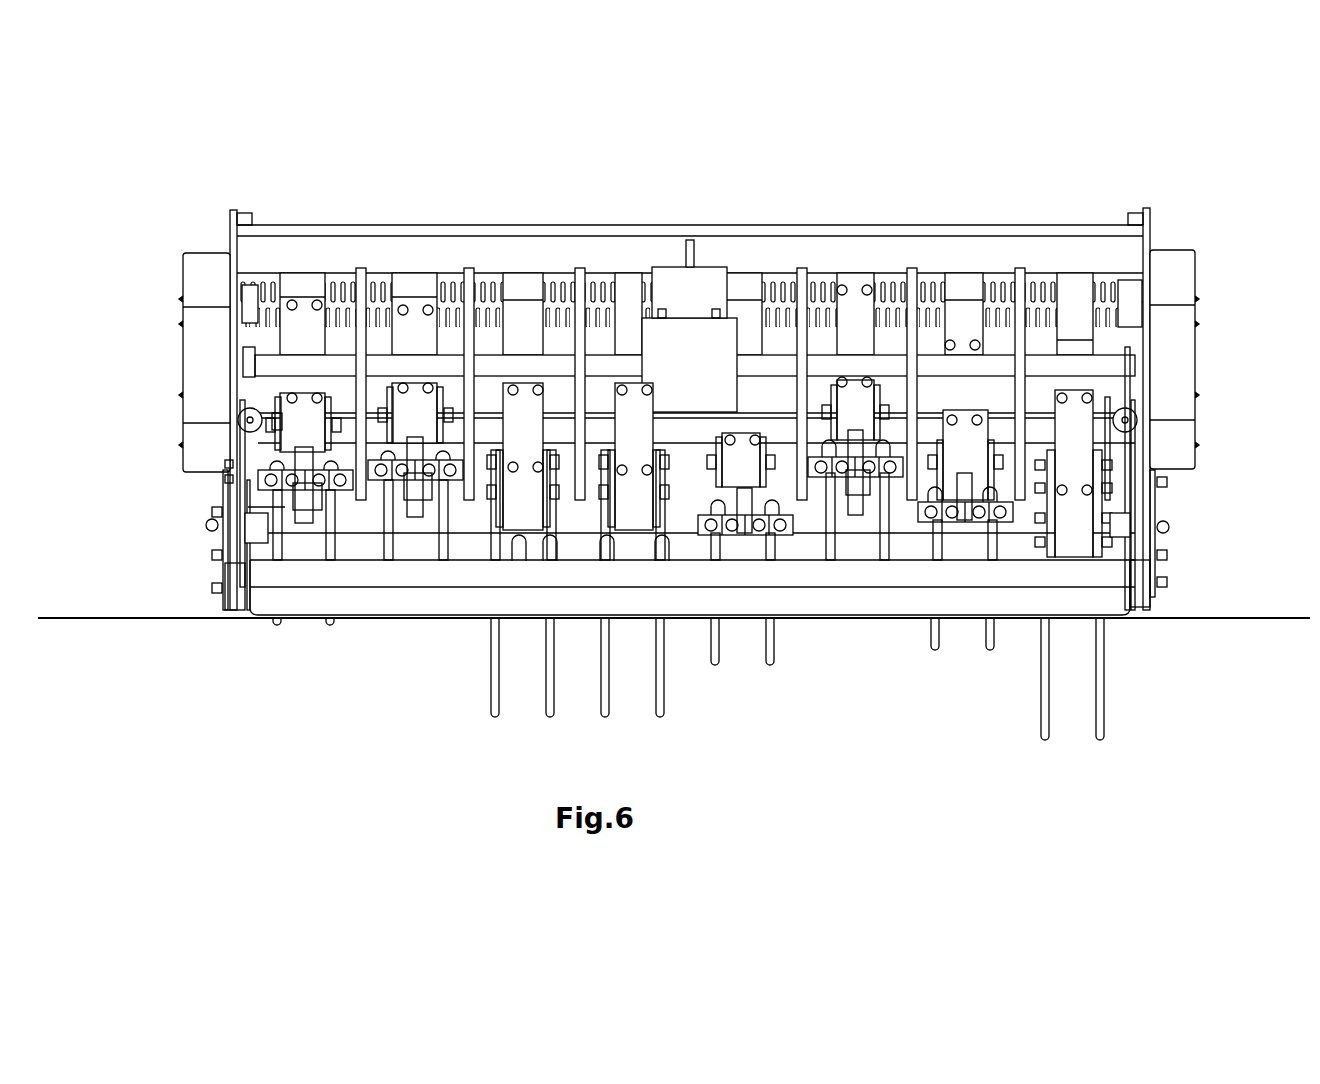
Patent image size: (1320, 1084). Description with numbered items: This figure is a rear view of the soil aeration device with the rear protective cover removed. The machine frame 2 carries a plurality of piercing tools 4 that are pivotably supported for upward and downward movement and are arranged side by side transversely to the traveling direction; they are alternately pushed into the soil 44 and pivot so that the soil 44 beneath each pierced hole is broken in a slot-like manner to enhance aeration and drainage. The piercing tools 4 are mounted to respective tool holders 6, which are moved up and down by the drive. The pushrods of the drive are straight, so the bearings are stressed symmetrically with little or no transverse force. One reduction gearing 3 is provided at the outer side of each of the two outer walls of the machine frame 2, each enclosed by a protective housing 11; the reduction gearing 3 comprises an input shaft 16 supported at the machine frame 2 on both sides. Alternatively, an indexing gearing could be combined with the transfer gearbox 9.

The machine frame 2 is at (235, 240).
The reduction gearing 3 is at (167, 390).
The piercing tools 4 is at (492, 682).
The tool holder 6 is at (287, 455).
The transfer gearbox 9 is at (690, 360).
The protective housing 11 is at (183, 450).
The input shaft 16 is at (533, 330).
The soil 44 is at (90, 618).